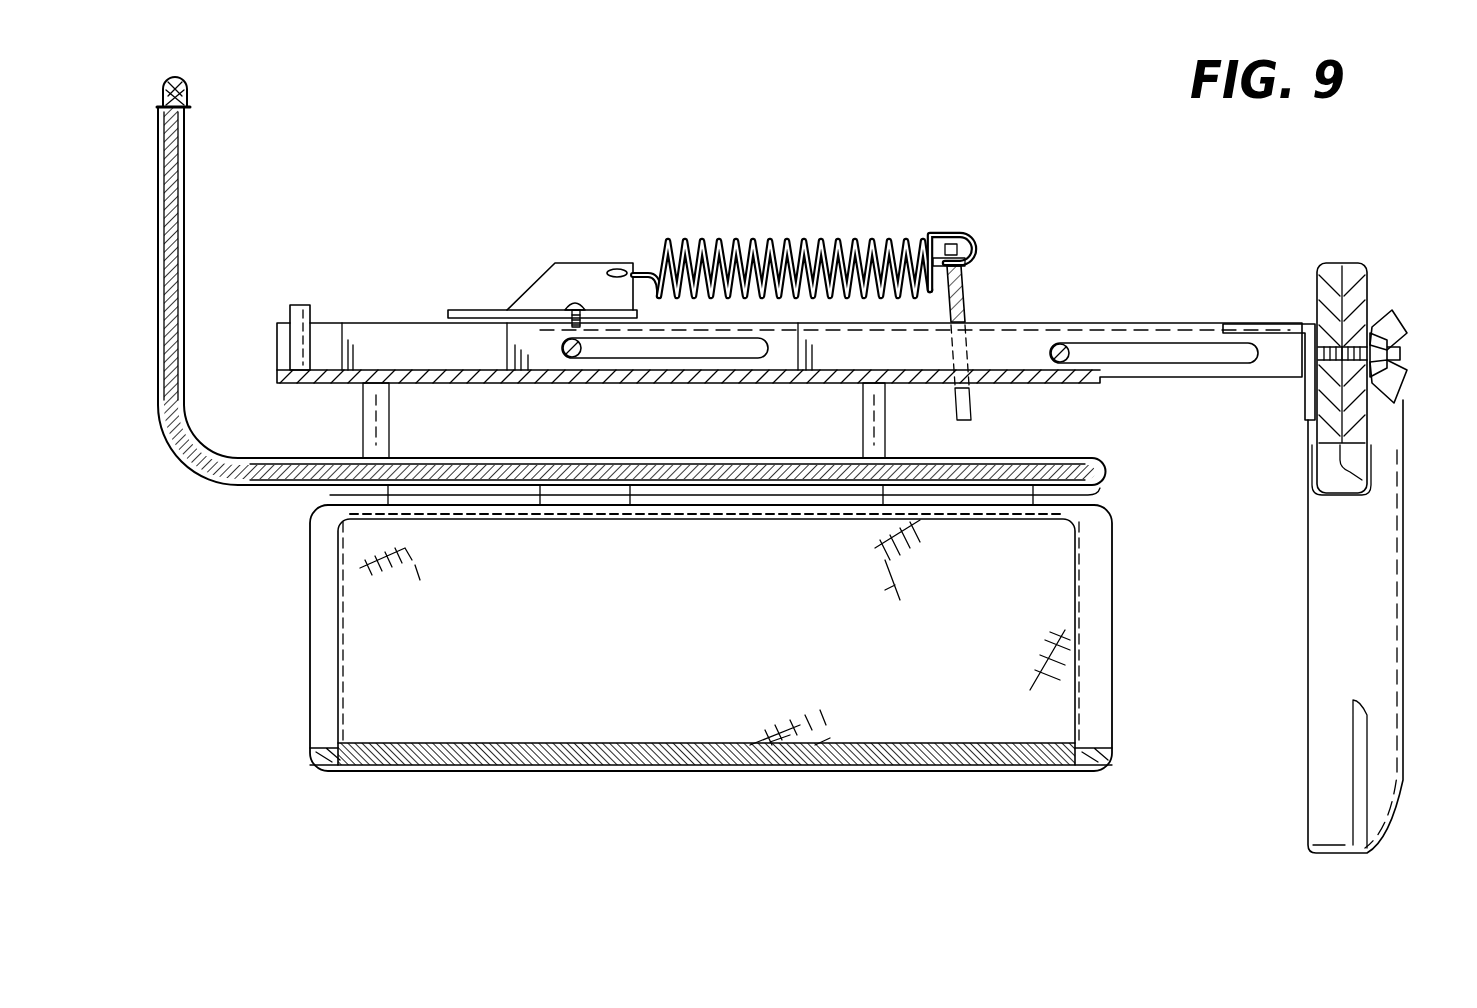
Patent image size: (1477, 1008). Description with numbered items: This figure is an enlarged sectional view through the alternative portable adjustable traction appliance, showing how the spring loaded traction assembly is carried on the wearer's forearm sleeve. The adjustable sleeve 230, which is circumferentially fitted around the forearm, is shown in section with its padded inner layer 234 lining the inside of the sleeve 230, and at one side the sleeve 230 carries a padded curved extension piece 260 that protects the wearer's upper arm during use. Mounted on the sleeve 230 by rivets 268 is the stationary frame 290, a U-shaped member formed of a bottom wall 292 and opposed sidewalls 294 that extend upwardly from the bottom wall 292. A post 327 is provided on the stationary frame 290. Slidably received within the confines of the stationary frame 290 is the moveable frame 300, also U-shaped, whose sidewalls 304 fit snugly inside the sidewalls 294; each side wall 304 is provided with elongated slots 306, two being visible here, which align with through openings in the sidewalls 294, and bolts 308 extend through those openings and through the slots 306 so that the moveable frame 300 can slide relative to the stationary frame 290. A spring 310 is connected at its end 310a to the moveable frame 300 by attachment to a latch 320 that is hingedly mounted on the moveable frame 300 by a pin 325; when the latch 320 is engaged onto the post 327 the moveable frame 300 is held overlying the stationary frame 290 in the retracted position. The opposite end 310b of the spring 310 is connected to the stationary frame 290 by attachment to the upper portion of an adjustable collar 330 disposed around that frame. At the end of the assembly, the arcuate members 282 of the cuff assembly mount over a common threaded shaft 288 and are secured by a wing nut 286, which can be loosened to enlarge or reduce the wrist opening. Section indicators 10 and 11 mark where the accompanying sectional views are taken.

The padded curved extension piece 260 is at (186, 172).
The stationary frame 290 is at (745, 393).
The sidewalls 294 is at (325, 320).
The post 327 is at (298, 328).
The bottom wall 292 is at (448, 352).
The sidewalls 304 is at (847, 353).
The elongated slots 306 is at (608, 350).
The bolts 308 is at (562, 346).
The rivets 268 is at (370, 420).
The latch 320 is at (545, 280).
The pin 325 is at (578, 303).
The spring end 310a is at (620, 270).
The spring 310 is at (790, 240).
The spring end 310b is at (975, 252).
The adjustable collar 330 is at (962, 290).
The moveable frame 300 is at (1066, 315).
The threaded shaft 288 is at (1312, 365).
The arcuate members 282 is at (1318, 578).
The wing nut 286 is at (1395, 312).
The padded inner layer 234 is at (1100, 630).
The adjustable sleeve 230 is at (652, 735).
The section line 10- 10 is at (993, 205).
The section line 11- 11 is at (1058, 275).